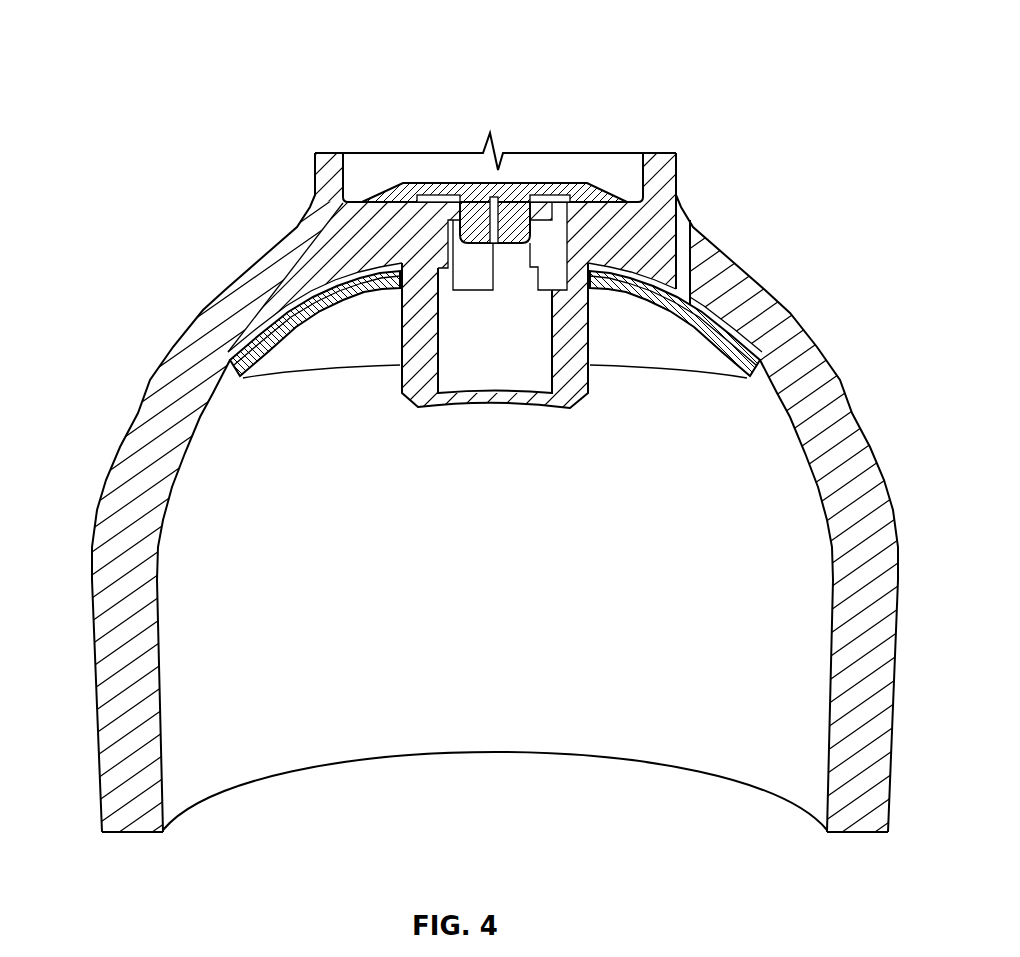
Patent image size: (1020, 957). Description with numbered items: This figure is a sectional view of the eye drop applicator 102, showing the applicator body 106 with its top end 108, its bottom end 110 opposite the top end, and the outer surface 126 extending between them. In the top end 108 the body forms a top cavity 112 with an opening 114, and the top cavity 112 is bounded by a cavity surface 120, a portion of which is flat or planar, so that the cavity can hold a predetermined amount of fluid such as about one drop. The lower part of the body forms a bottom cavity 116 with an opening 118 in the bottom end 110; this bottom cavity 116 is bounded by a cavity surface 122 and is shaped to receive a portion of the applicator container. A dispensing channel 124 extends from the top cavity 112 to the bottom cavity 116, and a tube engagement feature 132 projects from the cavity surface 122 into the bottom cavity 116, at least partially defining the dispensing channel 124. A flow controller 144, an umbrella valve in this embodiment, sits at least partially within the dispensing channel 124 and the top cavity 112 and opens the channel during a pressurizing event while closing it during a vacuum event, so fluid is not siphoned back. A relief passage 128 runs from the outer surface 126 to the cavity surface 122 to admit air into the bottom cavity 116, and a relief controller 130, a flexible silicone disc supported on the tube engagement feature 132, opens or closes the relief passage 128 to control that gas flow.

The eye drop applicator 102 is at (152, 40).
The applicator body 106 is at (820, 397).
The top end 108 is at (557, 152).
The bottom end 110 is at (213, 793).
The top cavity 112 is at (627, 164).
The opening 114 is at (431, 143).
The bottom cavity 116 is at (390, 758).
The opening 118 is at (617, 767).
The cavity surface 120 is at (395, 160).
The cavity surface 122 is at (200, 675).
The dispensing channel 124 is at (496, 368).
The outer surface 126 is at (96, 568).
The relief passage 128 is at (679, 218).
The relief controller 130 is at (297, 307).
The tube engagement feature 132 is at (575, 392).
The flow controller 144 is at (505, 182).